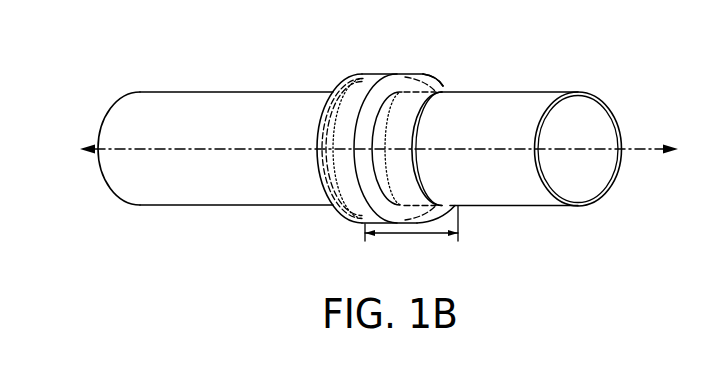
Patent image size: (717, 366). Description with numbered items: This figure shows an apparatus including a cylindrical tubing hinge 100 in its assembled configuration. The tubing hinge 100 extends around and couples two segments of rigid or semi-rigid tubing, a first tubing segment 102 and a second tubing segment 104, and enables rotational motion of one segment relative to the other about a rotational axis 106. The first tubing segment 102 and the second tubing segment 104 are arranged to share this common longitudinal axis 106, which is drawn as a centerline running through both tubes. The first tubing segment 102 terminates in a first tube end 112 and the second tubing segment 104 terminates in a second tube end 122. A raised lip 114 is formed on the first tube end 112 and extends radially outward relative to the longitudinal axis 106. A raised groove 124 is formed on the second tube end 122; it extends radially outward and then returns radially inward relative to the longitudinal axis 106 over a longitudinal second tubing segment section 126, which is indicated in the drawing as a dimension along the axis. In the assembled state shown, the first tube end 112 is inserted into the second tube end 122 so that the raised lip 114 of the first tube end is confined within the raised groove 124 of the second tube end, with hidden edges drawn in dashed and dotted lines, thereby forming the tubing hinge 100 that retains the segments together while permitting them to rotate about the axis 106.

The cylindrical tubing hinge 100 is at (384, 74).
The first tubing segment 102 is at (538, 207).
The second tubing segment 104 is at (175, 92).
The longitudinal axis 106 is at (623, 152).
The first tube end 112 is at (350, 210).
The raised lip 114 is at (336, 92).
The second tube end 122 is at (443, 86).
The raised groove 124 is at (362, 76).
The longitudinal second tubing segment section 126 is at (411, 235).